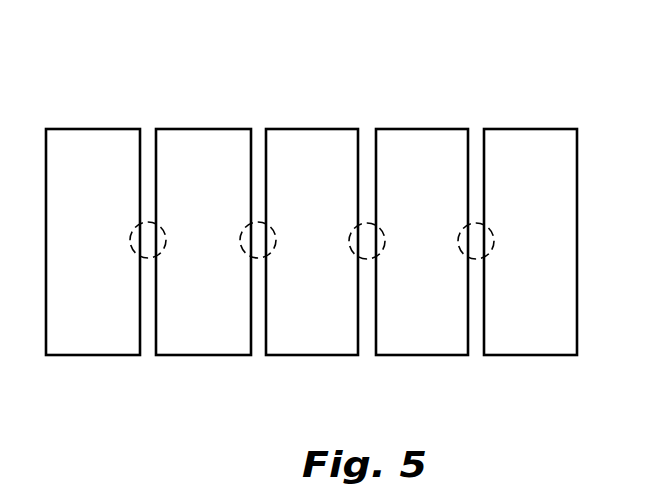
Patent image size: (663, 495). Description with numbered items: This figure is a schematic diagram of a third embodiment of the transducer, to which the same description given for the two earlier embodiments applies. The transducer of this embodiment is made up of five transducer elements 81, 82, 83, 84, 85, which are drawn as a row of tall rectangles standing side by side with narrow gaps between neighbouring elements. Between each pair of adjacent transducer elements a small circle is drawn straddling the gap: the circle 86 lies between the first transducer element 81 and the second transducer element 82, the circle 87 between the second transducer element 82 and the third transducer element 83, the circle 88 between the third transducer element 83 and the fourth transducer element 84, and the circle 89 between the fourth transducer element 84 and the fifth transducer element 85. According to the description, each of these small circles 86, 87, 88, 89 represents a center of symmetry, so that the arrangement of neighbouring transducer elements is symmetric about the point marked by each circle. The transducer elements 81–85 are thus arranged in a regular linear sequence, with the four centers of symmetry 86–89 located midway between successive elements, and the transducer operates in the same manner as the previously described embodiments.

The transducer element 81 is at (90, 128).
The transducer element 82 is at (210, 128).
The transducer element 83 is at (313, 128).
The transducer element 84 is at (423, 128).
The transducer element 85 is at (531, 128).
The center of symmetry 86 is at (135, 255).
The center of symmetry 87 is at (245, 255).
The center of symmetry 88 is at (353, 255).
The center of symmetry 89 is at (458, 255).